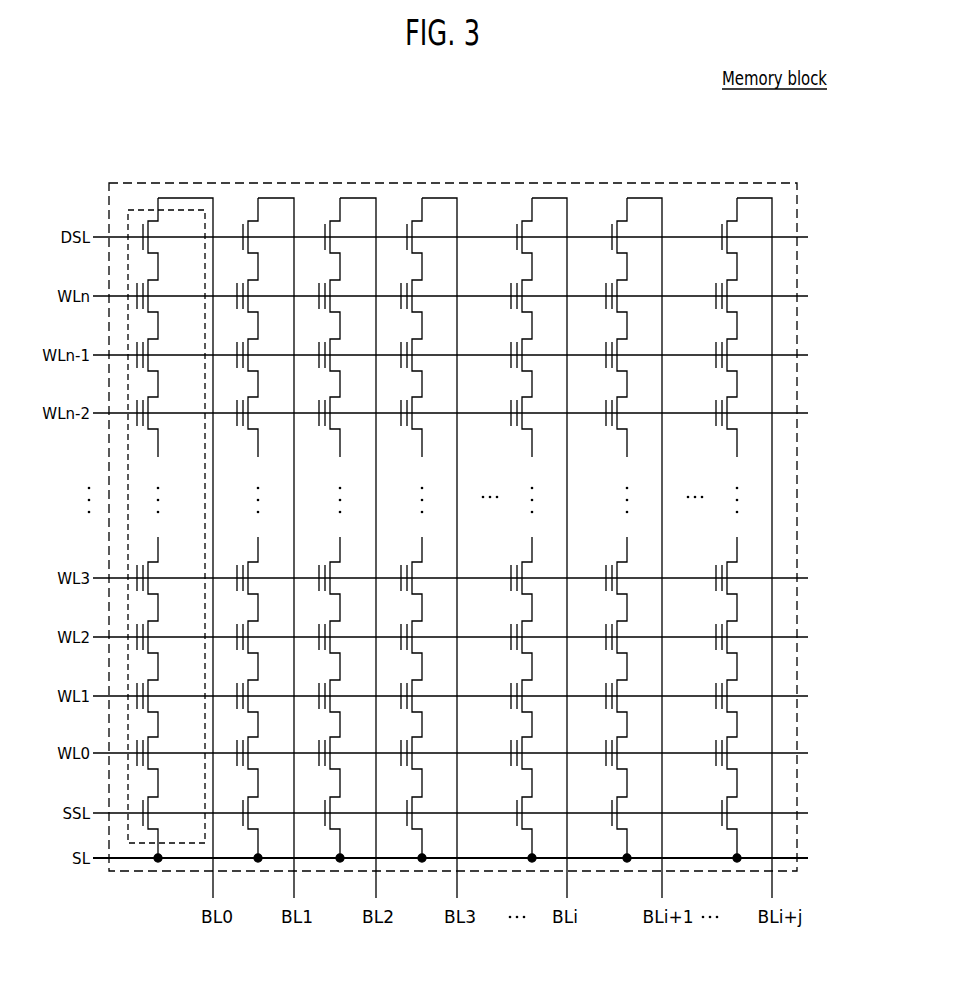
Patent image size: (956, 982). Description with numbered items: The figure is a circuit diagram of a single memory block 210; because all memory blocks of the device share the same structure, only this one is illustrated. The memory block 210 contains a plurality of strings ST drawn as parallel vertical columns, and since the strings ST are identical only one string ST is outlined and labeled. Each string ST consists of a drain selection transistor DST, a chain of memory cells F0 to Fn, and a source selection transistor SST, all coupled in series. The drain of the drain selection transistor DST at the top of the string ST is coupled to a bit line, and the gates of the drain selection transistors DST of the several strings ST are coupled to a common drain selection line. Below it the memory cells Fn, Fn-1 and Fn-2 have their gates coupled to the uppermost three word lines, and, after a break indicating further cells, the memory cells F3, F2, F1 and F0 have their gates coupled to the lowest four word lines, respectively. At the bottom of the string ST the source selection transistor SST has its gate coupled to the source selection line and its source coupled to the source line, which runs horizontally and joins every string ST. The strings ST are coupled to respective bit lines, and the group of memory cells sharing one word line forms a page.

The memory block 210 is at (443, 184).
The string ST is at (169, 523).
The drain selection transistor DST is at (168, 241).
The source selection transistor SST is at (167, 810).
The memory cell F0 is at (159, 750).
The memory cell F1 is at (159, 692).
The memory cell F2 is at (159, 634).
The memory cell F3 is at (159, 576).
The memory cell Fn-2 is at (166, 420).
The memory cell Fn-1 is at (166, 361).
The memory cell Fn is at (159, 301).